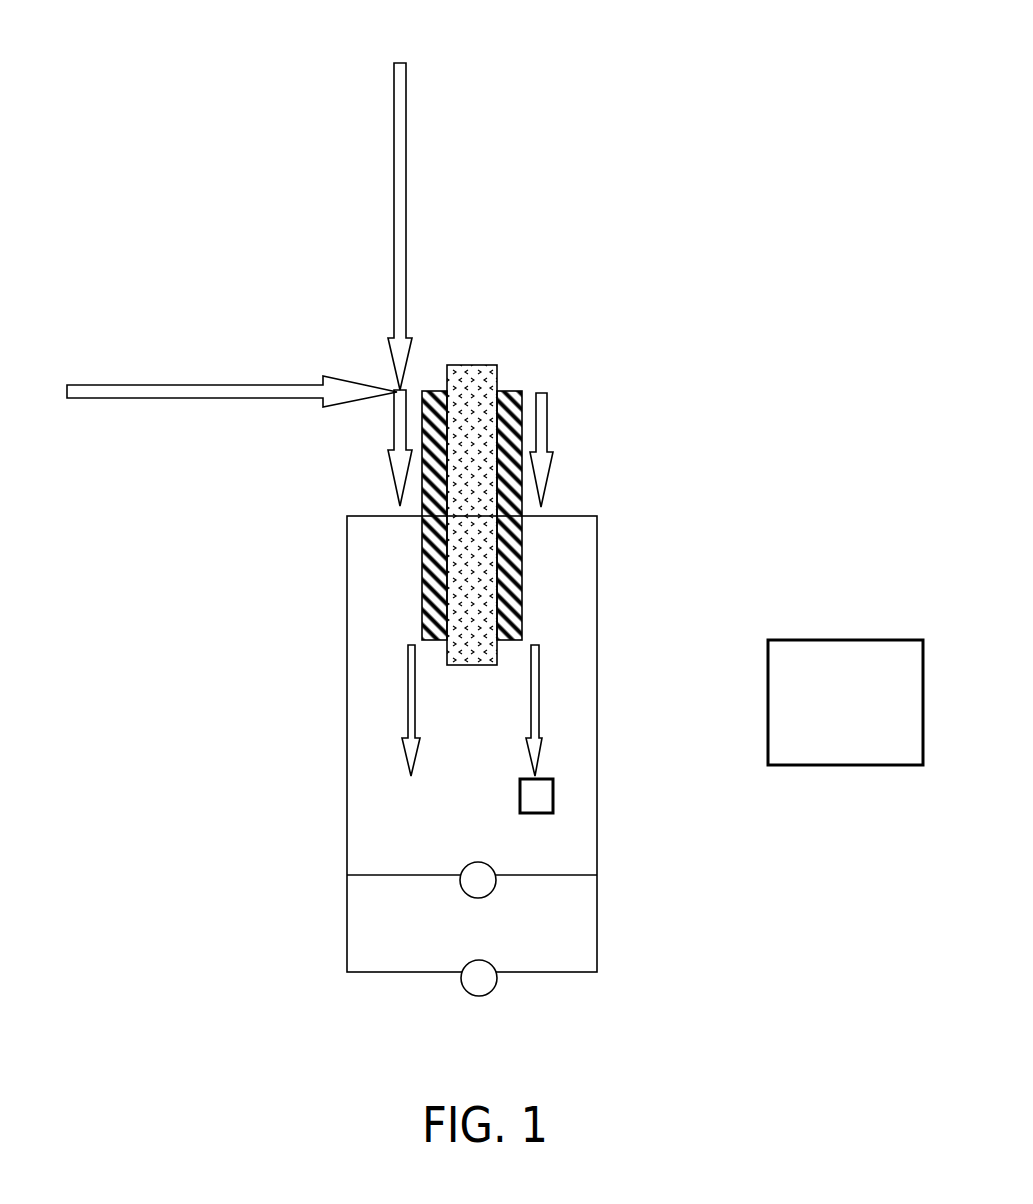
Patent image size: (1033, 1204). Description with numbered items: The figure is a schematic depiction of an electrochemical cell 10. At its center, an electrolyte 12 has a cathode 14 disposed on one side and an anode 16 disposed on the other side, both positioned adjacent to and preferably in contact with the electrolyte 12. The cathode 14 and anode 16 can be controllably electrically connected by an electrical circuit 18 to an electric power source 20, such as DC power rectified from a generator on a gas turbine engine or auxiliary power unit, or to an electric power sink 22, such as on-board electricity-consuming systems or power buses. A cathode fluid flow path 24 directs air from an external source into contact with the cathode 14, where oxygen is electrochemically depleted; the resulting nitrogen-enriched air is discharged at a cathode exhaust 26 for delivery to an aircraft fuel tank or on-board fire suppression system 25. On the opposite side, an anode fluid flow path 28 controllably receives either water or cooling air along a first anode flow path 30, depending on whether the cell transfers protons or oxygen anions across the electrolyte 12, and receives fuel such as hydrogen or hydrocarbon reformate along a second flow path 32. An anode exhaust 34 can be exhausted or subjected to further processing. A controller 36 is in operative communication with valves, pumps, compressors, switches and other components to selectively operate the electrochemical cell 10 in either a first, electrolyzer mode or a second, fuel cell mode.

The electrochemical cell 10 is at (774, 259).
The electrolyte 12 is at (472, 365).
The cathode 14 is at (512, 643).
The anode 16 is at (437, 643).
The electrical circuit 18 is at (572, 516).
The electric power source 20 is at (483, 899).
The electric power sink 22 is at (492, 990).
The cathode fluid flow path 24 is at (548, 427).
The aircraft fuel tank or on-board fire suppression system 25 is at (553, 802).
The cathode exhaust 26 is at (540, 712).
The anode fluid flow path 28 is at (393, 425).
The first anode flow path 30 is at (188, 398).
The second flow path 32 is at (394, 95).
The anode exhaust 34 is at (407, 700).
The controller 36 is at (877, 765).